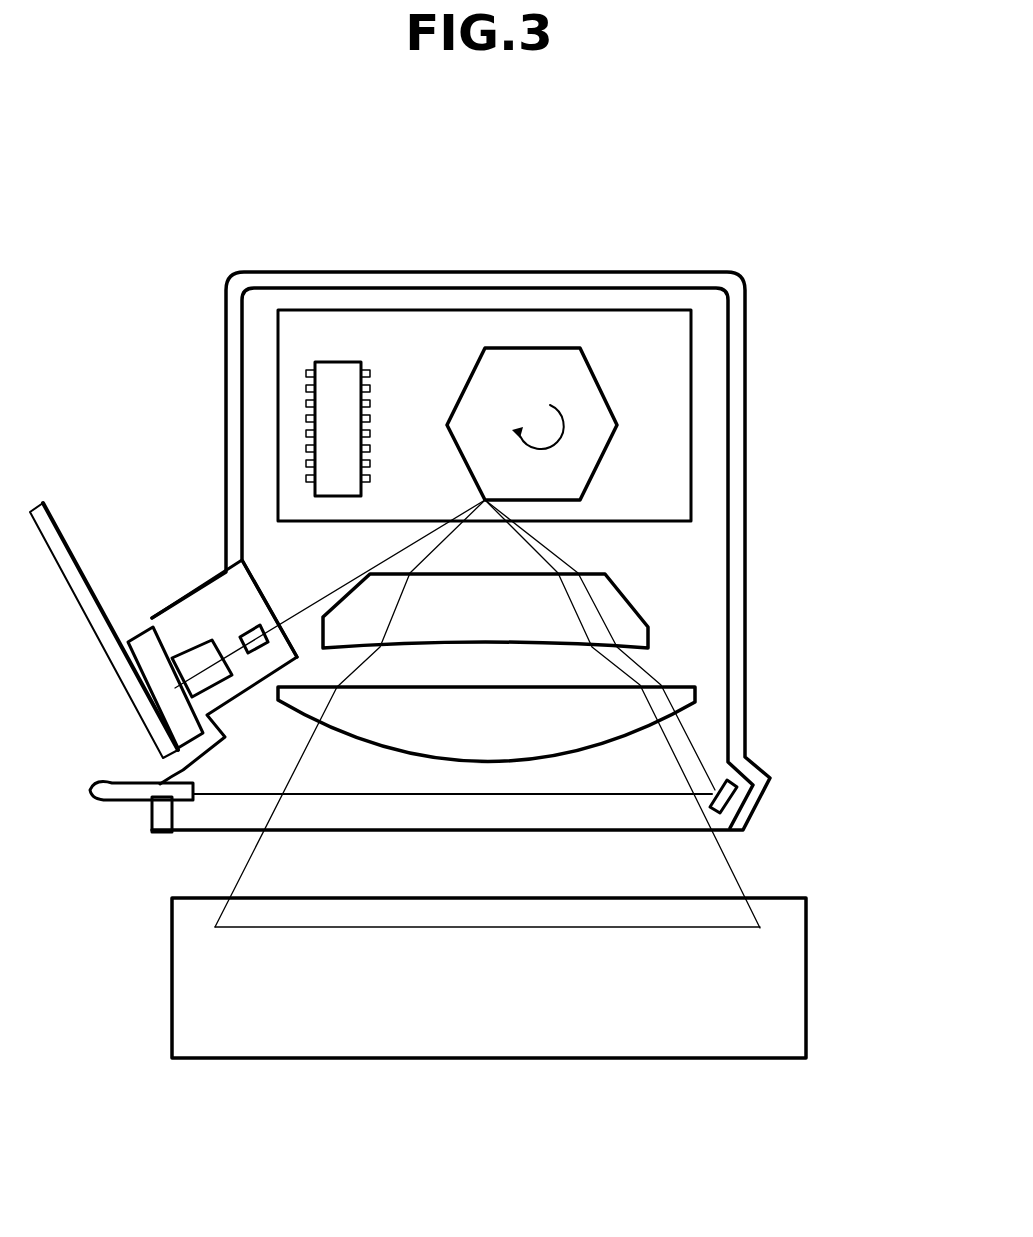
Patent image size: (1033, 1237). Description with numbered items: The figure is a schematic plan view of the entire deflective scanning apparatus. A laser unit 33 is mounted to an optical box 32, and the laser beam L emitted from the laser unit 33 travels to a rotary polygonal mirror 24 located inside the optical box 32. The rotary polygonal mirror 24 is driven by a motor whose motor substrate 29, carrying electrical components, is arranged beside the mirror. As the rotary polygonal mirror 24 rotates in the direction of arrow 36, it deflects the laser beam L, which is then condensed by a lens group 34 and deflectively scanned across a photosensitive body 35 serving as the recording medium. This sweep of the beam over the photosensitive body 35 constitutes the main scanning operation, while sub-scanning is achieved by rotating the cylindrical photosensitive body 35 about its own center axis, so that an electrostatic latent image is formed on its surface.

The optical box 32 is at (500, 271).
The motor substrate 29 is at (605, 327).
The rotary polygonal mirror 24 is at (597, 427).
The arrow 36 is at (544, 406).
The lens group 34 is at (627, 618).
The laser unit 33 is at (158, 688).
The laser beam L is at (735, 878).
The photosensitive body 35 is at (763, 965).